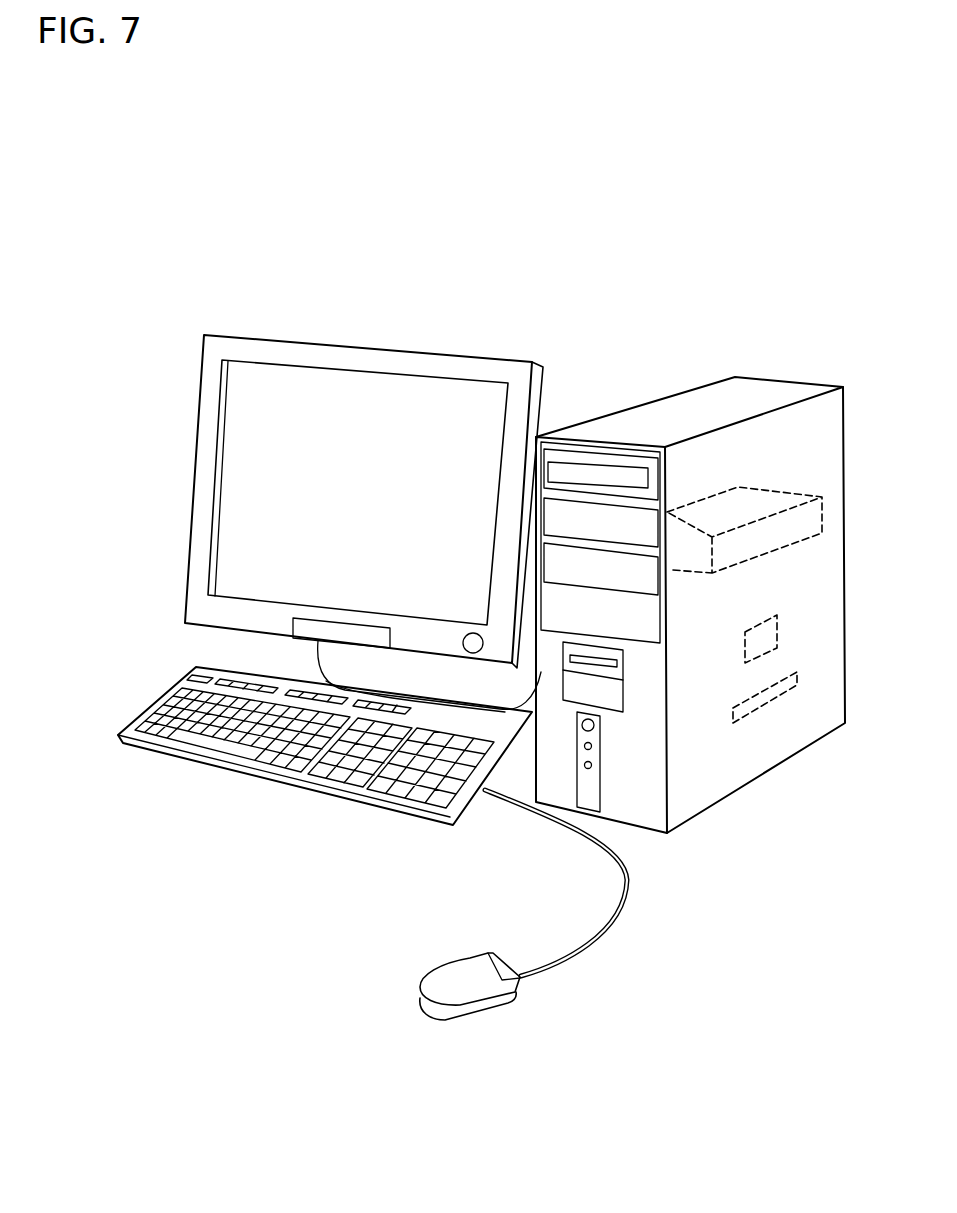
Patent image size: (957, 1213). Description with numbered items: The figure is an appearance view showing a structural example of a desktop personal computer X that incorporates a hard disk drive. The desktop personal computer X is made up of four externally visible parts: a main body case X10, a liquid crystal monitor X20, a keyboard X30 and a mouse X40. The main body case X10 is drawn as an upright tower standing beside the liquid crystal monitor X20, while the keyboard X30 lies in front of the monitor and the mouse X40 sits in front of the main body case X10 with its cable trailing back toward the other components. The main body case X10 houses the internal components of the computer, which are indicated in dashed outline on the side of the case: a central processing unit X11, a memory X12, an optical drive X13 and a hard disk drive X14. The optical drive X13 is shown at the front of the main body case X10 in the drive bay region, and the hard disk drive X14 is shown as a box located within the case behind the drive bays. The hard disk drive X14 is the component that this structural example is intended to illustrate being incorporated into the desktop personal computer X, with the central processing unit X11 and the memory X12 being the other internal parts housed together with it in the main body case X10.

The desktop personal computer X is at (134, 292).
The main body case X10 is at (683, 402).
The central processing unit X11 is at (765, 627).
The memory X12 is at (765, 692).
The optical drive X13 is at (647, 477).
The hard disk drive X14 is at (750, 497).
The liquid crystal monitor X20 is at (372, 357).
The keyboard X30 is at (260, 773).
The mouse X40 is at (457, 973).